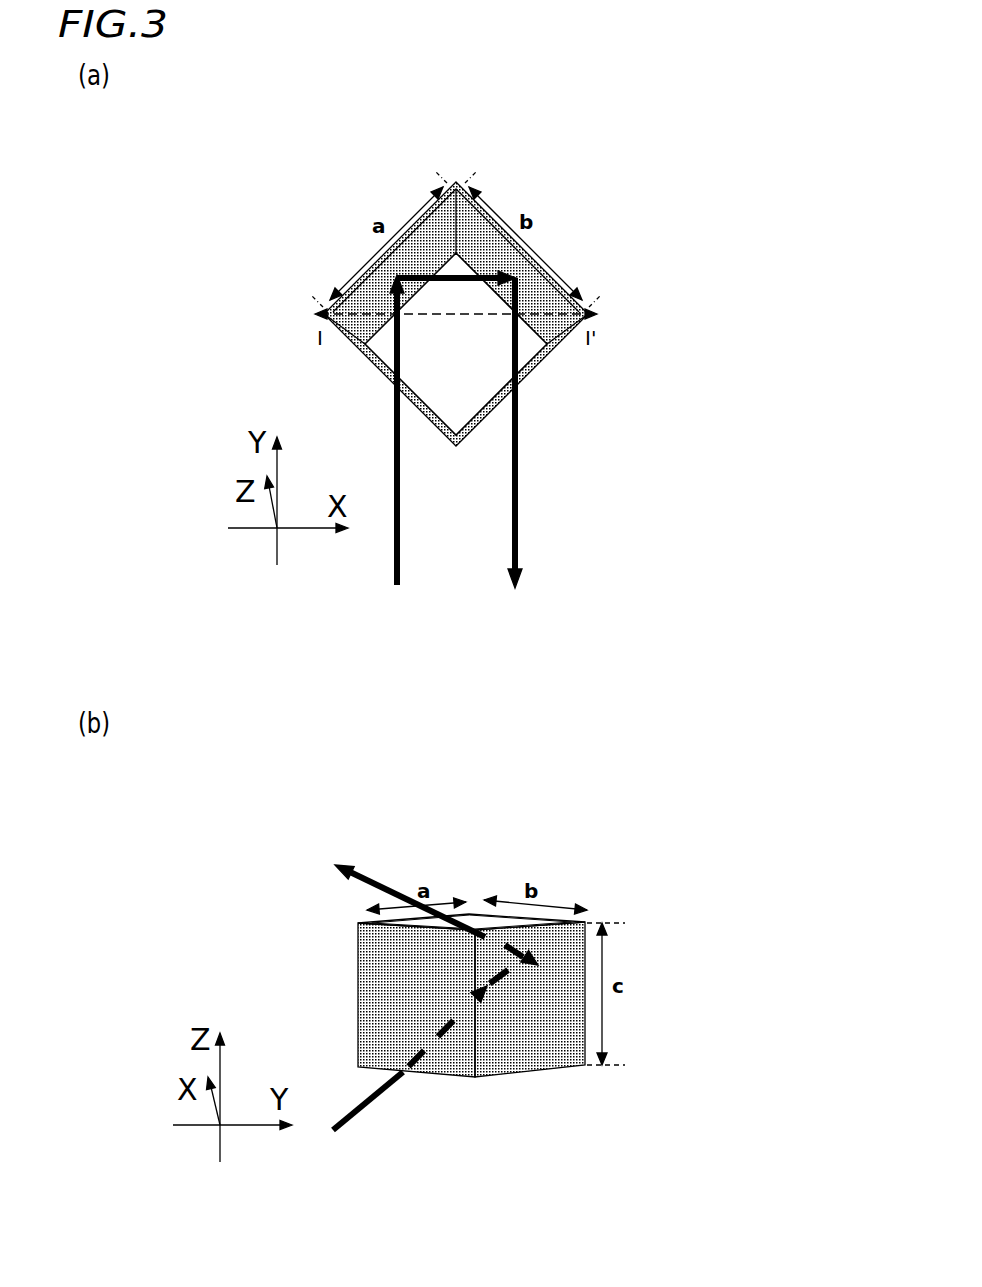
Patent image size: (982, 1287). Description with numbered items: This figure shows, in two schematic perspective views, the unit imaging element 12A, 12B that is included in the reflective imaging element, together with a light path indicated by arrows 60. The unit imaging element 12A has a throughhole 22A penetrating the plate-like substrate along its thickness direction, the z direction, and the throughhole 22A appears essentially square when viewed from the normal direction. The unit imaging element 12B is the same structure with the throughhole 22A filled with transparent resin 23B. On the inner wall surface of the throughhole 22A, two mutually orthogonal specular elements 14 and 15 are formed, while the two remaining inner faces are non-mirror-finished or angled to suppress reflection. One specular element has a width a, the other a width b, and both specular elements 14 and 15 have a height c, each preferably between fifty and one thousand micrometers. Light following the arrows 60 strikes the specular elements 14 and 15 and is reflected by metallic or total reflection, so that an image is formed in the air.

The unit imaging element 12A is at (512, 615).
The unit imaging element 12B is at (563, 233).
The specular element 14 is at (378, 291).
The specular element 15 is at (546, 291).
The throughhole 22A is at (496, 380).
The transparent resin 23B is at (527, 345).
The arrows 60 is at (400, 527).